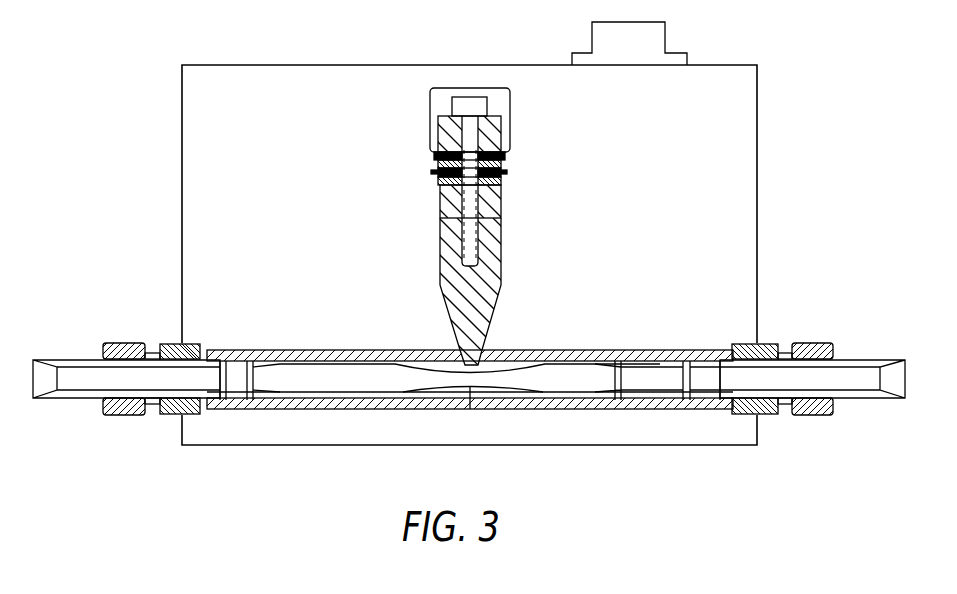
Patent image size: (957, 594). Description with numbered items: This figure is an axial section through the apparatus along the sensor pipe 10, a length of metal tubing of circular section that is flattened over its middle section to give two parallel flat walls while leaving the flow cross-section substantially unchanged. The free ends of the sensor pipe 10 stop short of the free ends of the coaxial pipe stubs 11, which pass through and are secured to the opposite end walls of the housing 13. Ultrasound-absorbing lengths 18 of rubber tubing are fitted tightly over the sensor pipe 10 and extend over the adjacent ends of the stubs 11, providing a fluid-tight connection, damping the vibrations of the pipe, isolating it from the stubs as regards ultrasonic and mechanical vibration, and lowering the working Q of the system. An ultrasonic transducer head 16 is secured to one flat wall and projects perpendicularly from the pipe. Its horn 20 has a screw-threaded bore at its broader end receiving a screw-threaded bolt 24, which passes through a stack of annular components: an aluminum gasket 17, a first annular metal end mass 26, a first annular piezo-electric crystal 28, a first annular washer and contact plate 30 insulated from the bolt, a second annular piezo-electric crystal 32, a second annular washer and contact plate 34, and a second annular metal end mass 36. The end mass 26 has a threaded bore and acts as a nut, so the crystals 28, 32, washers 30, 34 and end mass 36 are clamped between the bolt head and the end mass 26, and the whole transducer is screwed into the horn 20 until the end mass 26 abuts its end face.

The sensor pipe 10 is at (617, 363).
The pipe stub 11 is at (63, 359).
The housing 13 is at (757, 235).
The ultrasonic transducer head 16 is at (410, 238).
The aluminum gasket 17 is at (503, 217).
The ultrasound-absorbing length of rubber tubing 18 is at (338, 410).
The horn 20 is at (497, 263).
The screw-threaded bolt 24 is at (452, 96).
The first annular metal end mass 26 is at (440, 205).
The first annular piezo-electric crystal 28 is at (505, 178).
The first annular washer and contact plate 30 is at (435, 171).
The second annular piezo-electric crystal 32 is at (442, 160).
The second annular washer and contact plate 34 is at (504, 156).
The second annular metal end mass 36 is at (438, 130).